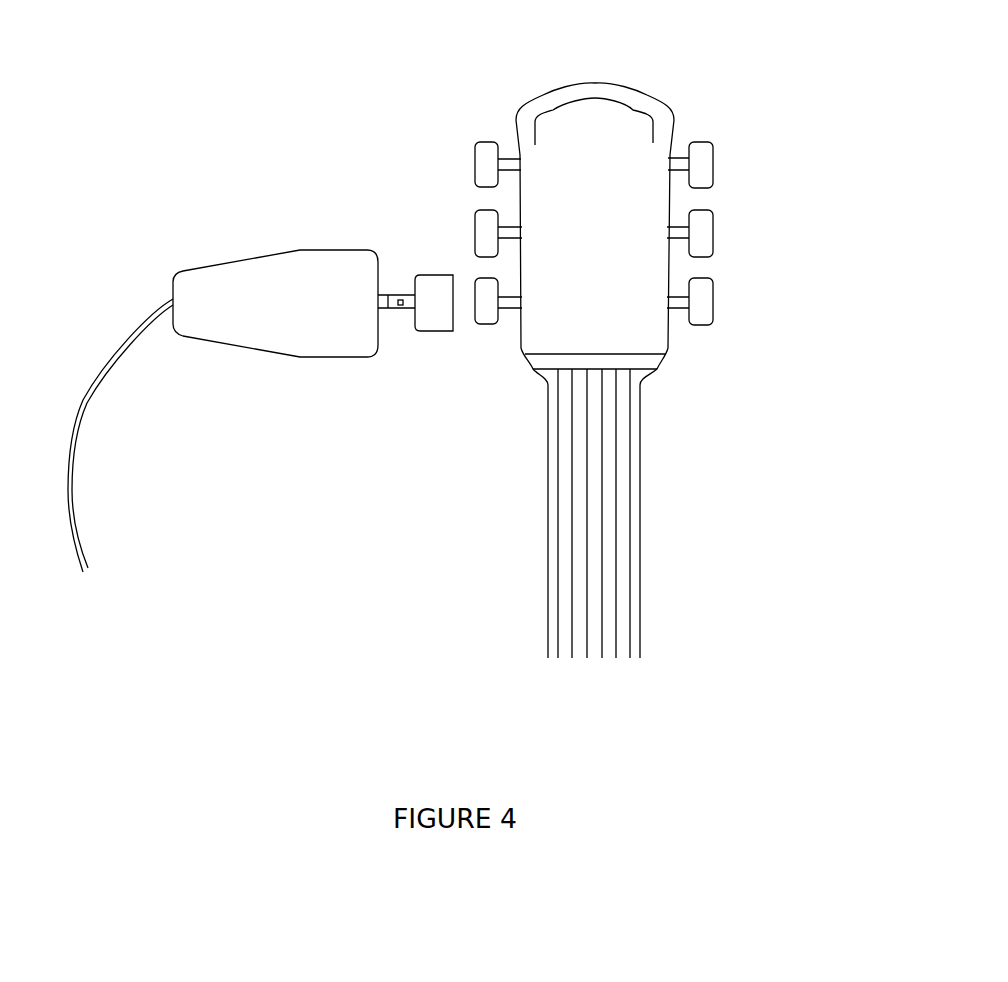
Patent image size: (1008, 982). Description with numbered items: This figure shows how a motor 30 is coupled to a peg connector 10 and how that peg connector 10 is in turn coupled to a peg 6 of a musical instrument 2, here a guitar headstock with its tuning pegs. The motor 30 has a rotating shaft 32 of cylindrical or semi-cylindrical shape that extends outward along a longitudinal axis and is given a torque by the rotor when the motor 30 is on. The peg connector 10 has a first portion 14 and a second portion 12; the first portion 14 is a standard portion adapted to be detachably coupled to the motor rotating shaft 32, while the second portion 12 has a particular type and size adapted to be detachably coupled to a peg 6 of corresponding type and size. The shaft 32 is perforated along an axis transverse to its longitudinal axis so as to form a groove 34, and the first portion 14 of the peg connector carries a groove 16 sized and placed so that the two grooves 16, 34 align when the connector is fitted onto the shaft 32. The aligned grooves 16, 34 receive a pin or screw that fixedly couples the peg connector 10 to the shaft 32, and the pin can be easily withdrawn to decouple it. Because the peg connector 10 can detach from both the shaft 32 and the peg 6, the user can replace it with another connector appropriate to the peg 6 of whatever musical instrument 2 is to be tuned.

The musical instrument 2 is at (617, 63).
The peg 6 is at (496, 325).
The peg connector 10 is at (447, 338).
The second portion 12 is at (443, 283).
The first portion 14 is at (399, 309).
The groove 16 is at (348, 406).
The groove 34 is at (405, 309).
The motor 30 is at (267, 253).
The rotating shaft 32 is at (389, 295).